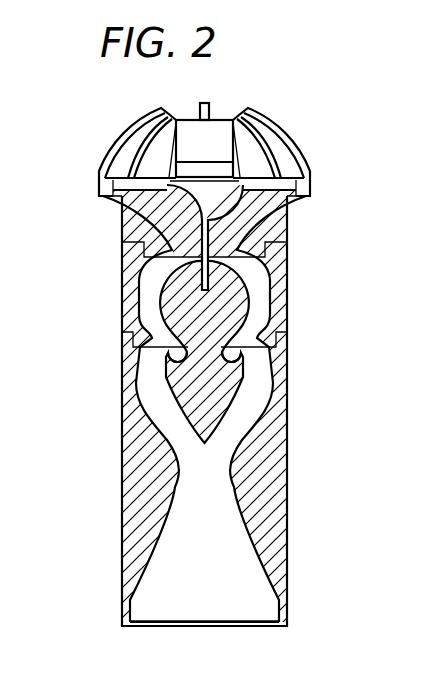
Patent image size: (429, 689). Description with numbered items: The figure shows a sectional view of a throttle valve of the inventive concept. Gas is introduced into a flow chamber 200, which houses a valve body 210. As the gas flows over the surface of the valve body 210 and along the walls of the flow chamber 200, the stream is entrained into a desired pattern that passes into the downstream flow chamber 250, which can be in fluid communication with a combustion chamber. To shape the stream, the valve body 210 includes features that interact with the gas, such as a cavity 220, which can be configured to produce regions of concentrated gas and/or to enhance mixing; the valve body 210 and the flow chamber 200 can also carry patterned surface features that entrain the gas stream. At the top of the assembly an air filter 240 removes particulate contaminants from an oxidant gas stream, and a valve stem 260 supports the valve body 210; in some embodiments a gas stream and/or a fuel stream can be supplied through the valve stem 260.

The flow chamber 200 is at (170, 424).
The valve body 210 is at (226, 318).
The cavity 220 is at (234, 377).
The air filter 240 is at (280, 152).
The downstream flow chamber 250 is at (210, 517).
The valve stem 260 is at (203, 258).